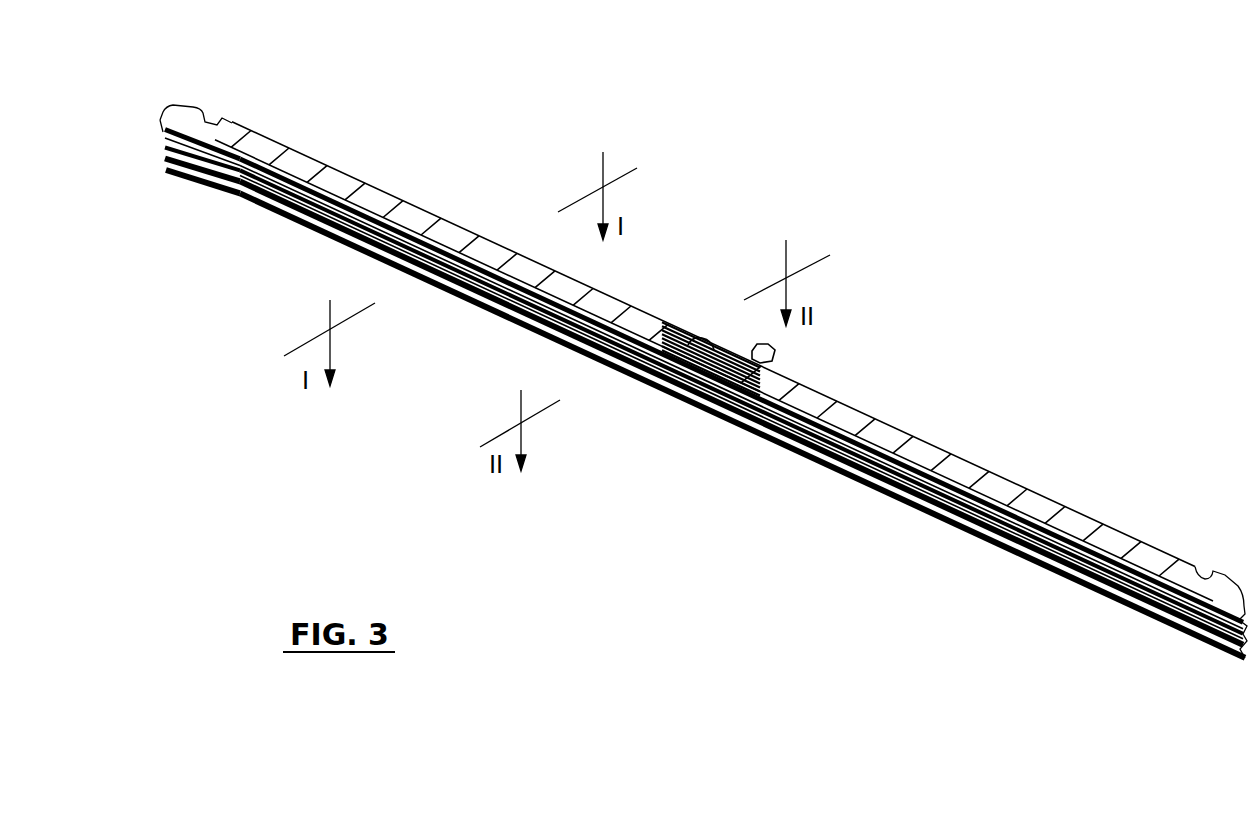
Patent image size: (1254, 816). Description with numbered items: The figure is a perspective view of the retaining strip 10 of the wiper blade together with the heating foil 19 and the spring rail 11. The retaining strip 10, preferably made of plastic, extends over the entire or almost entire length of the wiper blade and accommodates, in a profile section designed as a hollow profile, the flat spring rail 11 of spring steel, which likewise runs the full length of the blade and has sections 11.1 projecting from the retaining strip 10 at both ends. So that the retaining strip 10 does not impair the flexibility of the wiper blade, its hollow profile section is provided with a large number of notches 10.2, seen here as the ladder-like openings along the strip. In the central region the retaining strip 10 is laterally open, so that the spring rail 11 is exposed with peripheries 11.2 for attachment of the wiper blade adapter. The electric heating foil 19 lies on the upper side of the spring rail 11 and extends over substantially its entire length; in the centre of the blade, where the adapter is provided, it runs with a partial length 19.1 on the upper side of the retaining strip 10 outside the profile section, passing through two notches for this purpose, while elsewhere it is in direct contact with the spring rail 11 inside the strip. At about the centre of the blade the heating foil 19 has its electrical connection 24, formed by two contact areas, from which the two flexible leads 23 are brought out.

The retaining strip 10 is at (906, 335).
The notches 10.2 is at (714, 361).
The spring rail 11 is at (206, 193).
The projecting sections 11.1 is at (703, 345).
The peripheries 11.2 is at (741, 412).
The heating foil 19 is at (742, 439).
The partial length 19.1 is at (690, 231).
The flexible leads 23 is at (770, 353).
The electrical connection 24 is at (714, 300).